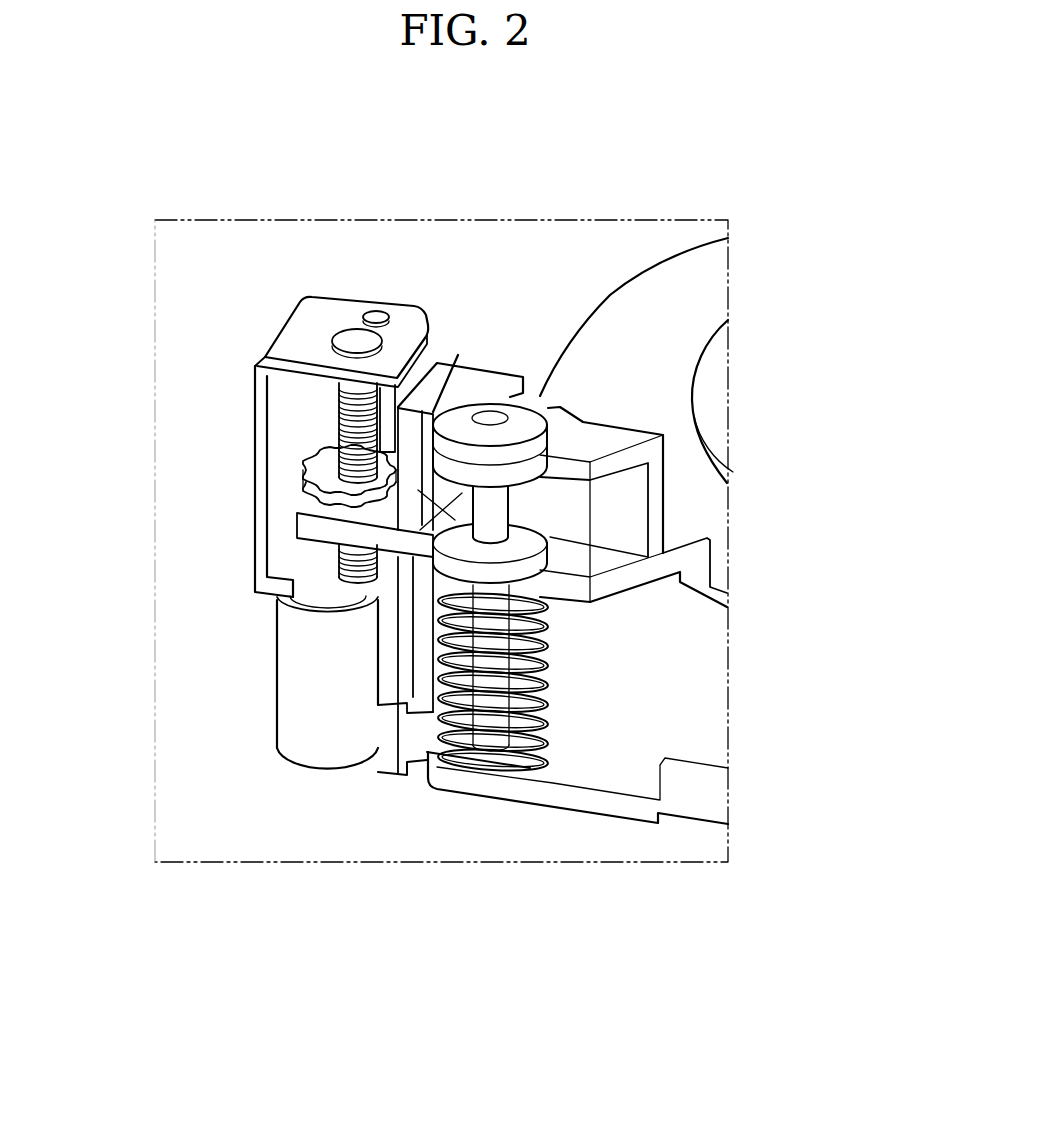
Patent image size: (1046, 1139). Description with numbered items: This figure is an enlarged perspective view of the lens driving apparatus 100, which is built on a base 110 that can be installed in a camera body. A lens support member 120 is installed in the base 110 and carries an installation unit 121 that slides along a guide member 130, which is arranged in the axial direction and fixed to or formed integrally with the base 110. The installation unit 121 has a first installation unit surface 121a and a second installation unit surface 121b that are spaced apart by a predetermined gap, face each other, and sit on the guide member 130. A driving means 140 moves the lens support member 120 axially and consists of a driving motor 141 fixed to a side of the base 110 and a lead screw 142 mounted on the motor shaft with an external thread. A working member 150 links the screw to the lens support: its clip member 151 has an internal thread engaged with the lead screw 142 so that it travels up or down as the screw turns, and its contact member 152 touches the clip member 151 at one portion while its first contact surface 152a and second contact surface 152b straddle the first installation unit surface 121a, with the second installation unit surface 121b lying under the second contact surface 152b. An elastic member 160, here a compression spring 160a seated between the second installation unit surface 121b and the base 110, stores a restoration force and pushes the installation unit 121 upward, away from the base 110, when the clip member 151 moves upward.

The lens driving apparatus 100 is at (217, 262).
The base 110 is at (608, 802).
The lens support member 120 is at (707, 570).
The installation unit 121 is at (663, 513).
The first installation unit surface 121a is at (535, 470).
The second installation unit surface 121b is at (532, 597).
The guide member 130 is at (497, 516).
The driving means 140 is at (229, 533).
The driving motor 141 is at (293, 660).
The lead screw 142 is at (340, 413).
The working member 150 is at (399, 614).
The clip member 151 is at (347, 490).
The contact member 152 is at (412, 591).
The first contact surface 152a is at (462, 423).
The second contact surface 152b is at (447, 518).
The elastic member 160 is at (484, 762).
The compression spring 160a is at (467, 720).